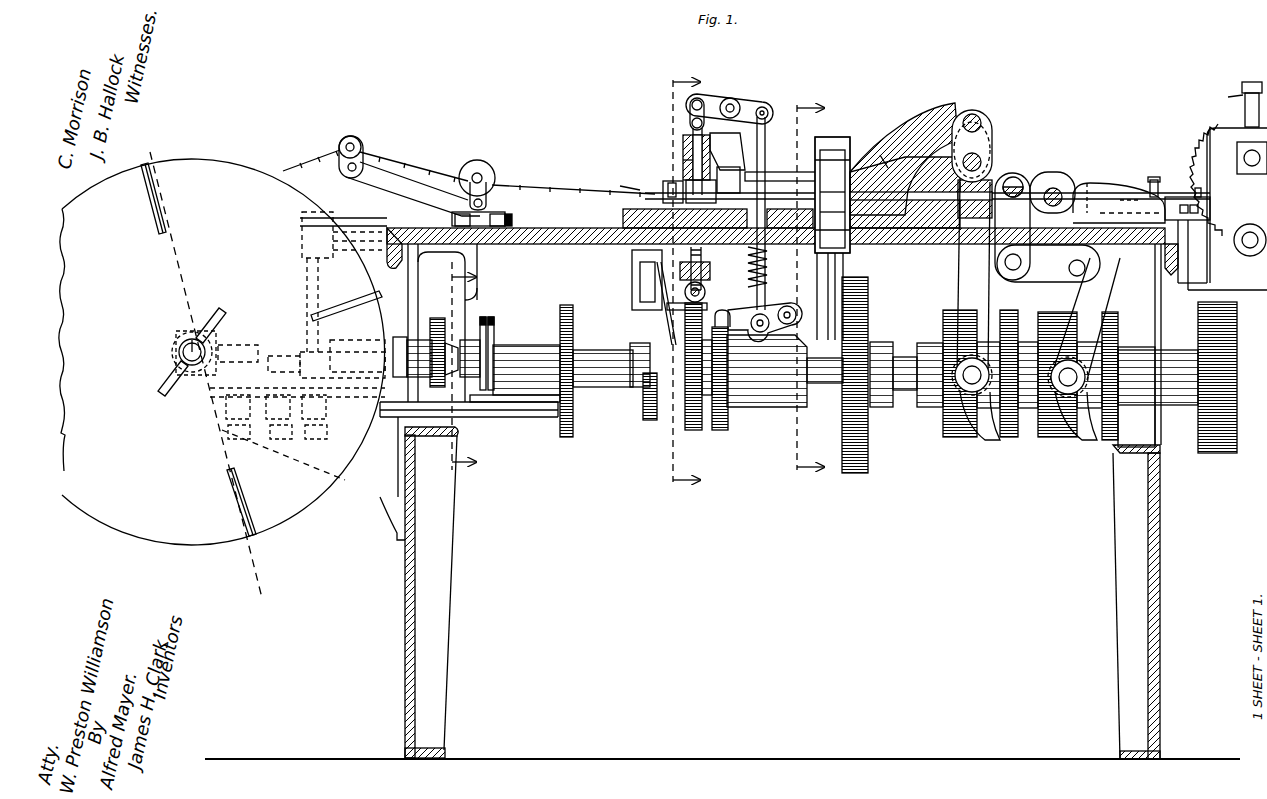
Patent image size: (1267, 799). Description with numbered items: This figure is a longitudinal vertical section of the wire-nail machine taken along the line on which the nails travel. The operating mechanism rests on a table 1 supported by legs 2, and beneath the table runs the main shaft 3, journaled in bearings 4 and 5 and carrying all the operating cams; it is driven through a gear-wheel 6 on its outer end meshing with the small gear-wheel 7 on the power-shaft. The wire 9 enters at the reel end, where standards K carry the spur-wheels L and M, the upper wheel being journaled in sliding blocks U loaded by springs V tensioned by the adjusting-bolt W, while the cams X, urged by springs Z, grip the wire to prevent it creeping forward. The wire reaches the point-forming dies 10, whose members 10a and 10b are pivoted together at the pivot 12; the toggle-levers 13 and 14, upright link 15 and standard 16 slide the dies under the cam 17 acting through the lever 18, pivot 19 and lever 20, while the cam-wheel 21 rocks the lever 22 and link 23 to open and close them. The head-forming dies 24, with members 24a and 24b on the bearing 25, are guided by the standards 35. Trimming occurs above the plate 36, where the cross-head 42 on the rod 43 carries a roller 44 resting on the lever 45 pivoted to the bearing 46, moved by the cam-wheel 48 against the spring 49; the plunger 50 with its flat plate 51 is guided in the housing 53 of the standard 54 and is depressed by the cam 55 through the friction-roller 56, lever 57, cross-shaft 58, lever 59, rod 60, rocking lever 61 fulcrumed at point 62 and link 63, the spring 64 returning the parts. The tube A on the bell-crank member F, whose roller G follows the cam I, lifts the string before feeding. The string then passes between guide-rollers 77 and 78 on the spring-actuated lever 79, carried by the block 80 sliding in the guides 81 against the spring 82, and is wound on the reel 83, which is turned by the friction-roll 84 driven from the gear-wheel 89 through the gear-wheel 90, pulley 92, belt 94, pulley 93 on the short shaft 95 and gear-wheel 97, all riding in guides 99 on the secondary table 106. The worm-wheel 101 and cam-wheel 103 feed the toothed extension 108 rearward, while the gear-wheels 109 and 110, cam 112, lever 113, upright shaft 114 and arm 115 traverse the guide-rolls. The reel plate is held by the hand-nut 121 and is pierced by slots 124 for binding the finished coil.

The table 1 is at (550, 244).
The legs 2 is at (452, 568).
The main shaft 3 is at (905, 390).
The bearing 4 is at (1185, 405).
The bearing 5 is at (765, 407).
The gear-wheel 6 is at (1210, 453).
The small gear-wheel 7 is at (1154, 177).
The wire 9 is at (1122, 195).
The point-forming dies 10 is at (904, 159).
The die member 10a is at (875, 151).
The die member 10b is at (880, 228).
The pivot 12 is at (958, 190).
The toggle-lever 13 is at (1000, 178).
The toggle-lever 14 is at (1042, 172).
The upright link 15 is at (1012, 226).
The standard 16 is at (1092, 183).
The cam 17 is at (1050, 437).
The lever 18 is at (1085, 349).
The pivot 19 is at (1085, 270).
The lever 20 is at (1030, 282).
The cam-wheel 21 is at (955, 437).
The lever 22 is at (978, 311).
The link 23 is at (992, 140).
The head-forming dies 24 is at (834, 225).
The die member 24a is at (833, 185).
The die member 24b is at (833, 203).
The bearing 25 is at (790, 172).
The standards 35 is at (570, 190).
The plate 36 is at (622, 216).
The cross-head 42 is at (707, 282).
The rod 43 is at (710, 270).
The roller 44 is at (705, 295).
The lever 45 is at (630, 285).
The bearing 46 is at (660, 290).
The cam-wheel 48 is at (693, 430).
The spring 49 is at (701, 255).
The plunger 50 is at (683, 160).
The flat plate 51 is at (718, 184).
The housing 53 is at (683, 140).
The standard 54 is at (727, 151).
The cam 55 is at (720, 430).
The friction-roller 56 is at (730, 312).
The lever 57 is at (750, 330).
The cross-shaft 58 is at (788, 325).
The lever 59 is at (766, 332).
The rod 60 is at (765, 148).
The rocking lever 61 is at (758, 100).
The fulcrum point 62 is at (730, 98).
The link 63 is at (690, 104).
The spring 64 is at (790, 268).
The guide-rollers 77 is at (495, 175).
The guide-rollers 78 is at (362, 146).
The lever 79 is at (412, 190).
The block 80 is at (475, 226).
The guides 81 is at (512, 220).
The spring 82 is at (440, 252).
The reel 83 is at (222, 352).
The friction-roll 84 is at (325, 340).
The gear-wheel 89 is at (573, 390).
The gear-wheel 90 is at (567, 437).
The pulley 92 is at (526, 370).
The pulley 93 is at (494, 325).
The belt 94 is at (488, 395).
The short shaft 95 is at (455, 345).
The gear-wheel 97 is at (437, 318).
The guides 99 is at (537, 417).
The worm-wheel 101 is at (248, 347).
The cam-wheel 103 is at (225, 404).
The secondary table 106 is at (483, 417).
The extension 108 is at (358, 415).
The gear-wheel 109 is at (182, 398).
The gear-wheel 110 is at (356, 388).
The cam 112 is at (355, 372).
The lever 113 is at (283, 356).
The upright shaft 114 is at (318, 285).
The arm 115 is at (362, 216).
The hand-nut 121 is at (180, 353).
The slots 124 is at (166, 201).
The tube A is at (662, 190).
The bell-crank member F is at (660, 260).
The roller G is at (632, 370).
The cam I is at (650, 420).
The standards K is at (1222, 209).
The spur-wheel L is at (1222, 232).
The spur-wheel M is at (1237, 168).
The sliding blocks U is at (1209, 165).
The springs V is at (804, 288).
The adjusting-bolt W is at (959, 281).
The cams X is at (699, 182).
The springs Z is at (456, 370).